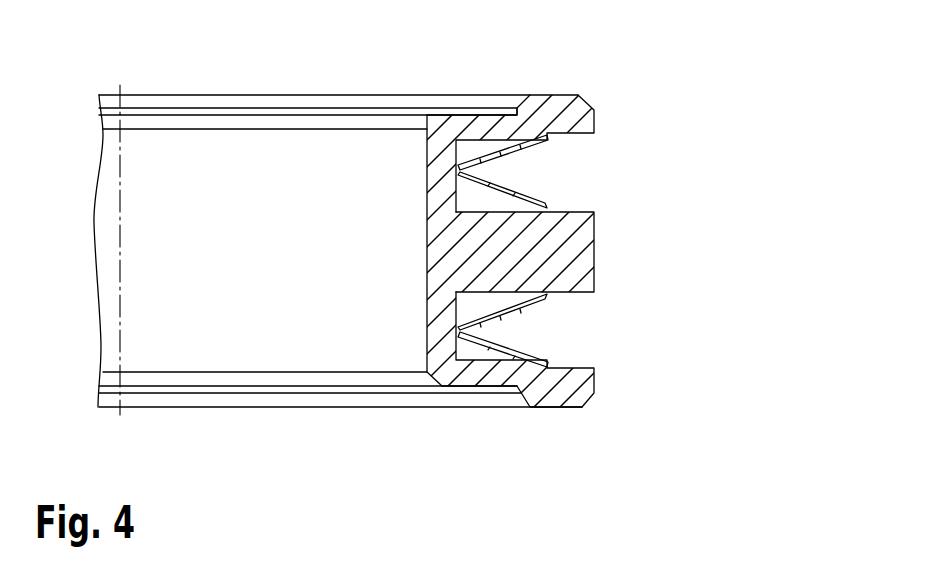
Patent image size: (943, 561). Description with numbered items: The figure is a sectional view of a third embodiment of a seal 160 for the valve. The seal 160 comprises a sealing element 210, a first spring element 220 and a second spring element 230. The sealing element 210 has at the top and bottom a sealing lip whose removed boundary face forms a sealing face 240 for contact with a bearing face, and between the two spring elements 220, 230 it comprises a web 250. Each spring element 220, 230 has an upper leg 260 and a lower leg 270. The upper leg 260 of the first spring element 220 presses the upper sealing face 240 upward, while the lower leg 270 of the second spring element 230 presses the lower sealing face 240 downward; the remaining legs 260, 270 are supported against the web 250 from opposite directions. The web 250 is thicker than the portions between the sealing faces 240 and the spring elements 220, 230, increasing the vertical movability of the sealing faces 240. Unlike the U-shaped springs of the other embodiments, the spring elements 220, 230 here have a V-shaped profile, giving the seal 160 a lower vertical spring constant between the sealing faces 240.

The seal 160 is at (715, 70).
The sealing element 210 is at (563, 95).
The first spring element 220 is at (518, 152).
The second spring element 230 is at (513, 306).
The sealing face 240 is at (555, 82).
The web 250 is at (570, 250).
The upper leg 260 is at (697, 132).
The lower leg 270 is at (697, 173).